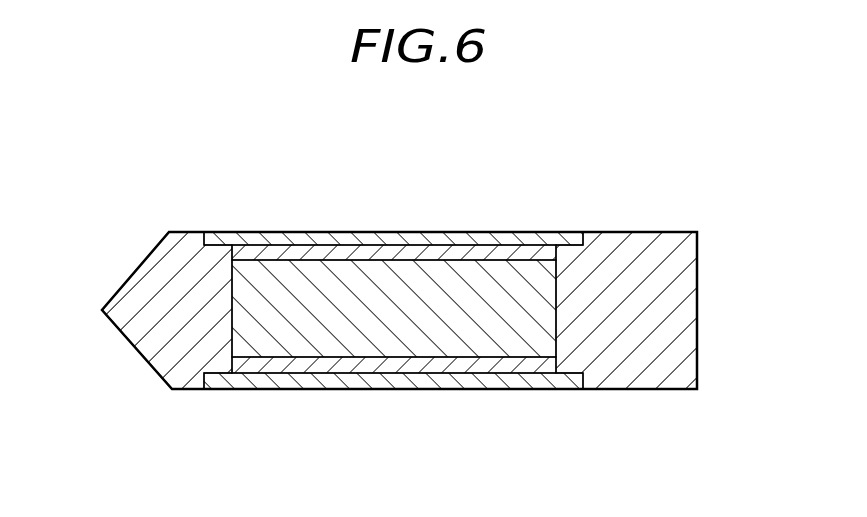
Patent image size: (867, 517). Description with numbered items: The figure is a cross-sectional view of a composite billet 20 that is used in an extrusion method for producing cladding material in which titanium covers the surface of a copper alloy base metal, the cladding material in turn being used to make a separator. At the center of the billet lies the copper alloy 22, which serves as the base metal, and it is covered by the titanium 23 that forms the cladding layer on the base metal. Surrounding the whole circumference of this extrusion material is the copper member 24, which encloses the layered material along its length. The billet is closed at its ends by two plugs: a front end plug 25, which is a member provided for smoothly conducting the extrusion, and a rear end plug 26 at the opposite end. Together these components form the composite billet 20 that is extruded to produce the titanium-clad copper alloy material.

The composite billet 20 is at (583, 217).
The copper alloy 22 is at (392, 333).
The titanium 23 is at (282, 408).
The copper member 24 is at (517, 408).
The front end plug 25 is at (140, 260).
The rear end plug 26 is at (685, 302).